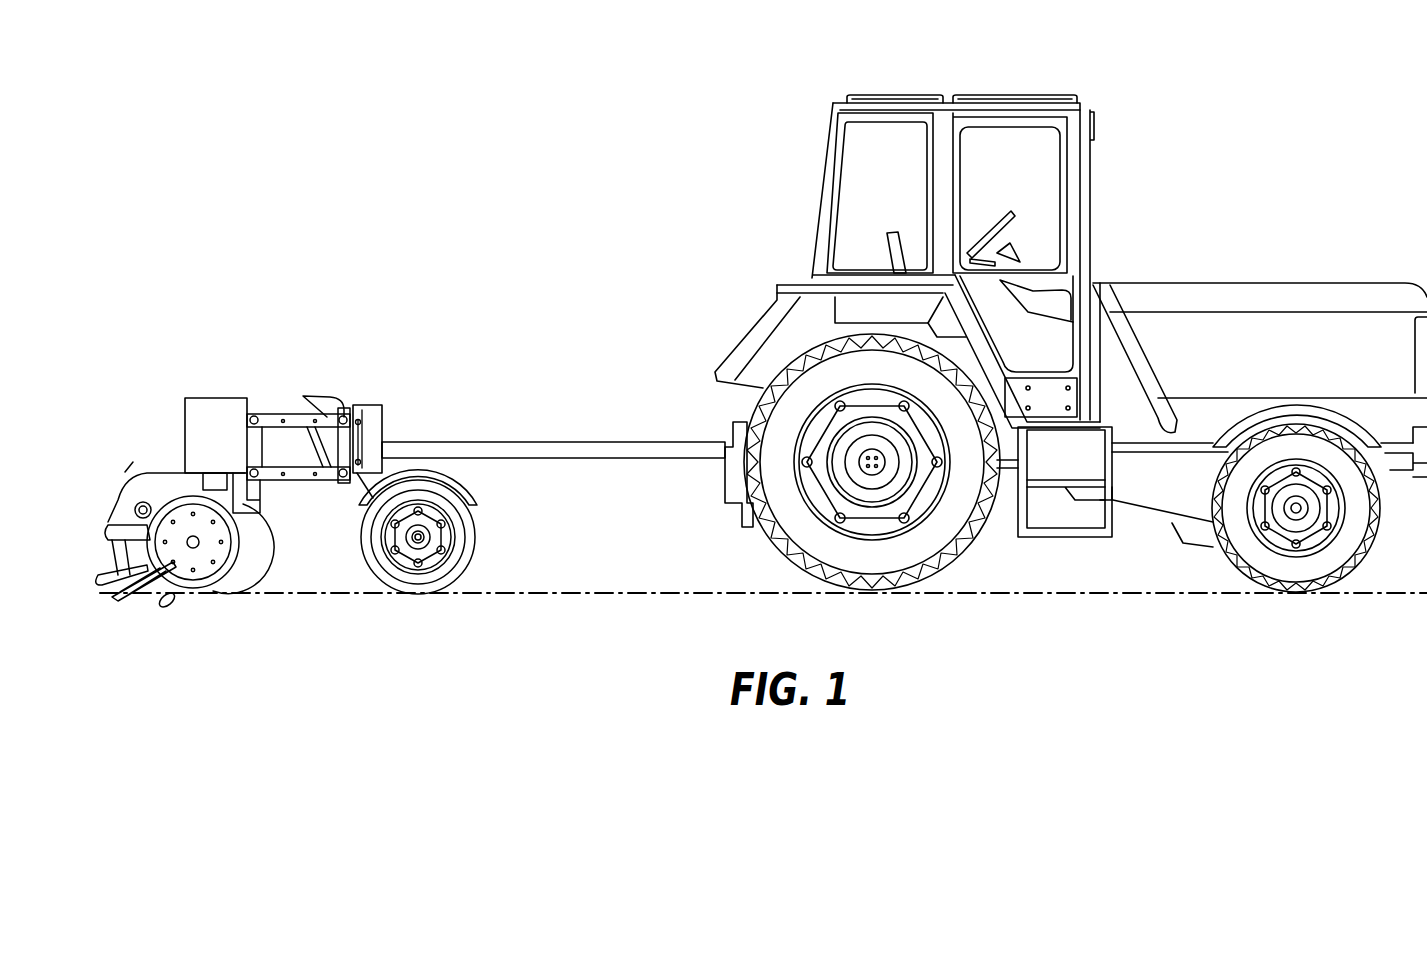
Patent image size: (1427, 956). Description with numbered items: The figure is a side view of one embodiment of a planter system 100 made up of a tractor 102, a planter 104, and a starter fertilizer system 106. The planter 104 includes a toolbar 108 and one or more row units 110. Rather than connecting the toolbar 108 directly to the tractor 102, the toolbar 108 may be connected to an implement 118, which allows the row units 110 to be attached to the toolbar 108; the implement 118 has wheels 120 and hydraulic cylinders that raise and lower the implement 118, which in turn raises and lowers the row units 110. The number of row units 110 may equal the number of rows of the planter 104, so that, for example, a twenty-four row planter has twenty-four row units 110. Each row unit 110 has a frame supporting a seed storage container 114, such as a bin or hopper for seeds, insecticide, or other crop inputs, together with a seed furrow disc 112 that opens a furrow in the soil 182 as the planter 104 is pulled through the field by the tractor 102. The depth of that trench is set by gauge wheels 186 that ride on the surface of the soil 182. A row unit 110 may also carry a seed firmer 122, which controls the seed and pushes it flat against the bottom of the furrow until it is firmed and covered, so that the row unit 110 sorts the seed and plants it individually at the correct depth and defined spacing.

The planter system 100 is at (544, 312).
The tractor 102 is at (1127, 537).
The planter 104 is at (280, 334).
The starter fertilizer system 106 is at (113, 614).
The toolbar 108 is at (369, 423).
The row unit 110 is at (296, 528).
The seed furrow disc 112 is at (190, 562).
The seed storage container 114 is at (226, 397).
The implement 118 is at (590, 450).
The wheels 120 is at (443, 556).
The seed firmer 122 is at (95, 553).
The soil 182 is at (1196, 604).
The gauge wheels 186 is at (251, 560).